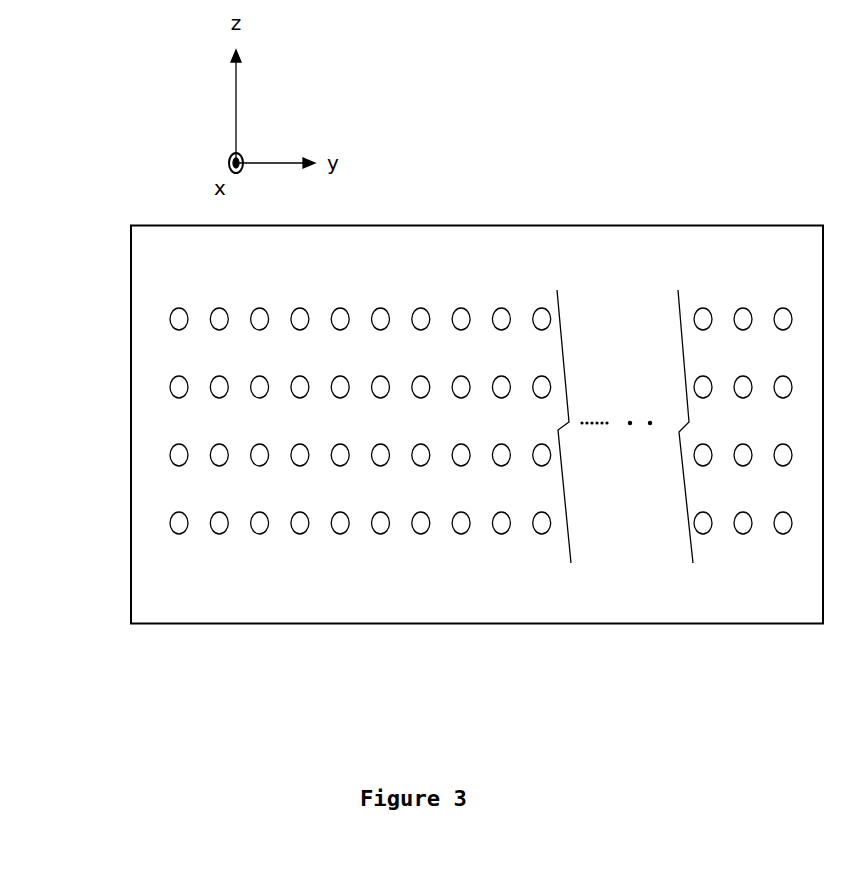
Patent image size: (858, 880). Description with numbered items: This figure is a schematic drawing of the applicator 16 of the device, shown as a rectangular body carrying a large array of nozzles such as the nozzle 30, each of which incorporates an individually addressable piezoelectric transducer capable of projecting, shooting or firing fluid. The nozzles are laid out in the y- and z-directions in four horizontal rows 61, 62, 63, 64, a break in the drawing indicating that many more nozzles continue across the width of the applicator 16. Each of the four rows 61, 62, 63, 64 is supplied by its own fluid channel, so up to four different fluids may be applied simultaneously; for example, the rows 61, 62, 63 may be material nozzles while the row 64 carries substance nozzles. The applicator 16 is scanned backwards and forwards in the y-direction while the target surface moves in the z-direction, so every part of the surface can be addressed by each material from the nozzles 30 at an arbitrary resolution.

The applicator 16 is at (474, 198).
The nozzle 30 is at (420, 308).
The row of nozzles 61 is at (423, 297).
The row of nozzles 62 is at (160, 384).
The row of nozzles 63 is at (160, 452).
The row of nozzles 64 is at (160, 520).